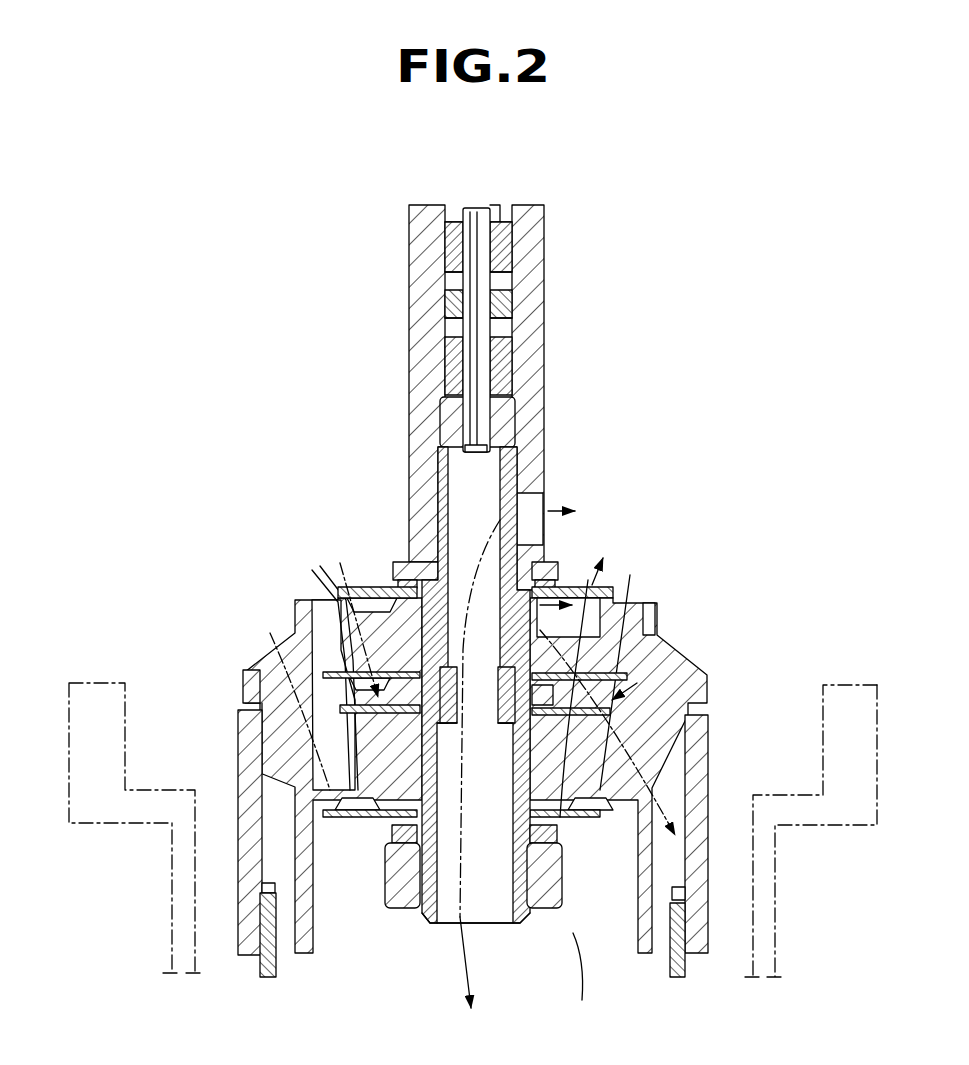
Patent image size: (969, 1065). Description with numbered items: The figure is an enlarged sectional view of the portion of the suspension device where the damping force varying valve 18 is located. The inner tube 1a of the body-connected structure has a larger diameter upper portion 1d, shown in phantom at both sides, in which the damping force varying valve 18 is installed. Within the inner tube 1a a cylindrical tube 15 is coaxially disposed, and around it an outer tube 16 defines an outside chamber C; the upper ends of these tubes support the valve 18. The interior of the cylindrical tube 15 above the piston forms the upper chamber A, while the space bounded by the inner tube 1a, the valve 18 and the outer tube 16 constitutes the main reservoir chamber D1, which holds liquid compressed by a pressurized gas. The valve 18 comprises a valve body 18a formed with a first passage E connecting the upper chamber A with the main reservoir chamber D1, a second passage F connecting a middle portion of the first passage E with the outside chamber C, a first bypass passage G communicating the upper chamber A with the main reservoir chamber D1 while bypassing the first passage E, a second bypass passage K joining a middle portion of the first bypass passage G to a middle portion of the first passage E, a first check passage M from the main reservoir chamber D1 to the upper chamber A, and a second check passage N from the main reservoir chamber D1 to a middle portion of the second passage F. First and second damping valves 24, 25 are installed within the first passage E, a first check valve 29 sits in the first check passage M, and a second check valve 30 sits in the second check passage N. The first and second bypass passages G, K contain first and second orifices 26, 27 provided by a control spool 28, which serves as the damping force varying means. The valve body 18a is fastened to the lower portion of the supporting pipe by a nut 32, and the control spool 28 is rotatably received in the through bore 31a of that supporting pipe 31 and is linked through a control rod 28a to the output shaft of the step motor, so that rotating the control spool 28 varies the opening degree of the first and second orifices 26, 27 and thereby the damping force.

The housing 31 is at (412, 410).
The control spool 28 is at (522, 450).
The control rod 28a is at (478, 249).
The first orifice 26 is at (512, 500).
The second orifice 27 is at (492, 612).
The second damping valve 25 is at (588, 580).
The damping force varying valve 18 is at (295, 595).
The valve body 18a is at (658, 618).
The first damping valve 24 is at (637, 683).
The second check valve 30 is at (332, 685).
The first check valve 29 is at (343, 813).
The nut 32 is at (385, 902).
The through bore 31a is at (500, 924).
The cylindrical tube 15 is at (313, 923).
The outer tube 16 is at (260, 967).
The second passage F is at (697, 783).
The outside chamber C is at (662, 943).
The first bypass passage G is at (460, 952).
The upper chamber A is at (590, 1032).
The second bypass passage K is at (475, 745).
The first passage E is at (607, 751).
The second check passage N is at (327, 588).
The first check passage M is at (270, 633).
The main reservoir chamber D1 is at (194, 753).
The larger diameter upper portion 1d is at (838, 817).
The inner tube 1a is at (768, 950).